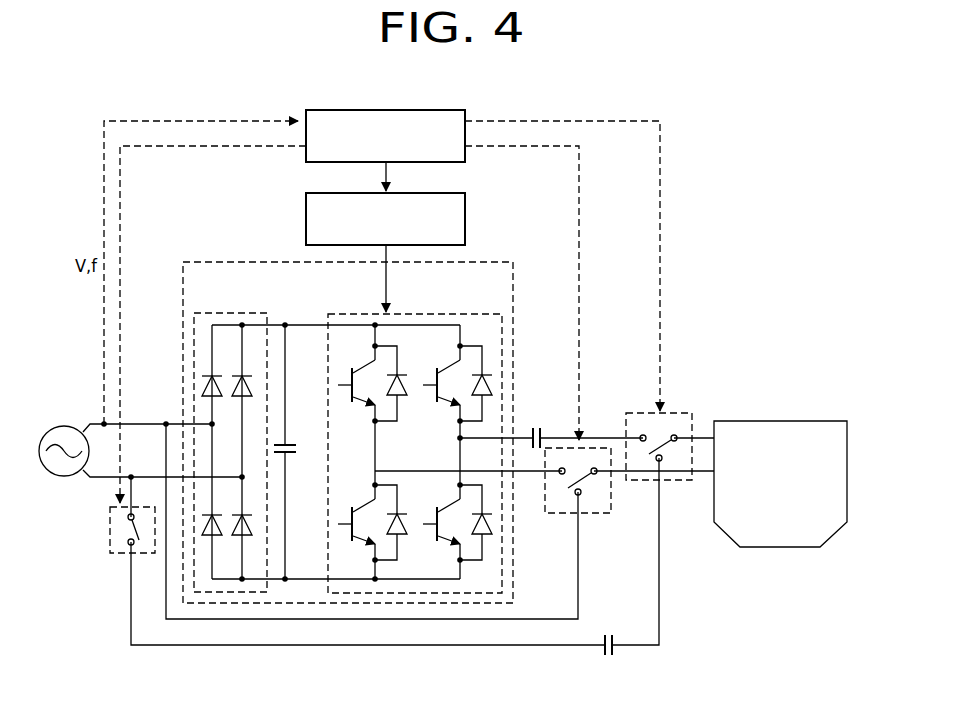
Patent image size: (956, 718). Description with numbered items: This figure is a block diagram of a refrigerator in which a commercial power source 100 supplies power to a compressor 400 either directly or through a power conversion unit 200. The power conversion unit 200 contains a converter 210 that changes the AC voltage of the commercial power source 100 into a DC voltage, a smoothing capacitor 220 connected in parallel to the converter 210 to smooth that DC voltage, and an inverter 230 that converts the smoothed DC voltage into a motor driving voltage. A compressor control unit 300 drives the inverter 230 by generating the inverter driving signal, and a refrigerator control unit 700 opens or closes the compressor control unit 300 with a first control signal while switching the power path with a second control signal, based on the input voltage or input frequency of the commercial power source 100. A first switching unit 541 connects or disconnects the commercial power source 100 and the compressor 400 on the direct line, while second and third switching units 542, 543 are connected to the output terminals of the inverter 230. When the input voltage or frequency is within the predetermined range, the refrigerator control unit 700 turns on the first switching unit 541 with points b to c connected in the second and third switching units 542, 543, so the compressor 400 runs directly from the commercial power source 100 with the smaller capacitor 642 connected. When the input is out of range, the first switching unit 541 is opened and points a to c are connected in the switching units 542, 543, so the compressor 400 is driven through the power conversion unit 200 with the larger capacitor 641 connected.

The commercial power source 100 is at (65, 426).
The power conversion unit 200 is at (492, 262).
The converter 210 is at (225, 313).
The smoothing capacitor 220 is at (294, 443).
The inverter 230 is at (417, 313).
The compressor control unit 300 is at (306, 218).
The compressor 400 is at (780, 421).
The first switching unit 541 is at (110, 529).
The second switching unit 542 is at (556, 513).
The third switching unit 543 is at (637, 480).
The capacitor 641 is at (535, 427).
The capacitor 642 is at (607, 633).
The refrigerator control unit 700 is at (386, 109).